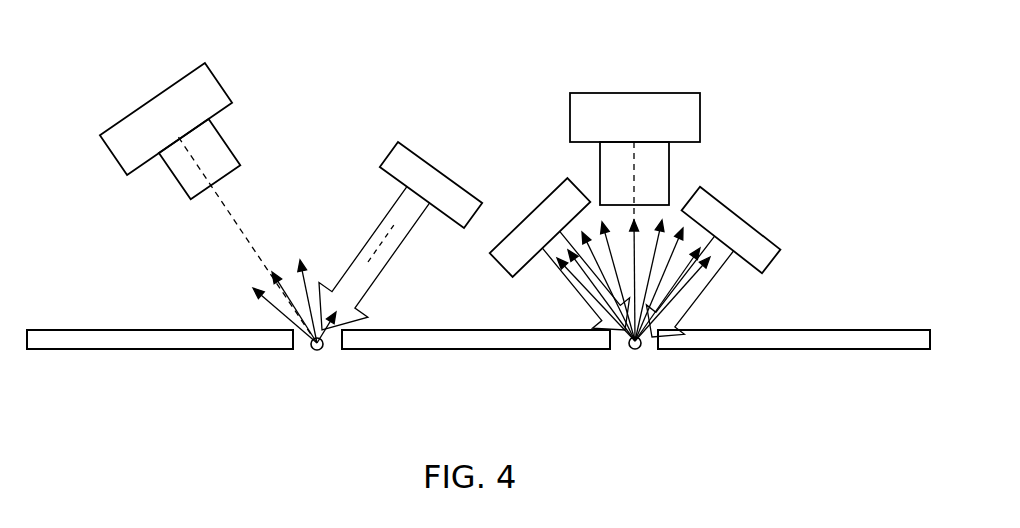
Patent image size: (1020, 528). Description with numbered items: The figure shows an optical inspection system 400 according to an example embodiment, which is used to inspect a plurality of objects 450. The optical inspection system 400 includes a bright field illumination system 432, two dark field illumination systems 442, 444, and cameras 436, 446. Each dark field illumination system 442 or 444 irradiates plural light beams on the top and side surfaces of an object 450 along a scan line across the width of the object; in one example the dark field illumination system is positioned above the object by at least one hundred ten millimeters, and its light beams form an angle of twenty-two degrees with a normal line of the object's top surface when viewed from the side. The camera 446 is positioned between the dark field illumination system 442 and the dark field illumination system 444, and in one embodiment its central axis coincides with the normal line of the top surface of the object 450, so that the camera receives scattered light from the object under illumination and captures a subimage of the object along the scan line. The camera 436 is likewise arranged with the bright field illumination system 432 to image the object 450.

The optical inspection system 400 is at (145, 44).
The bright field illumination system 432 is at (417, 168).
The camera 436 is at (140, 138).
The dark field illumination system 442 is at (738, 230).
The dark field illumination system 444 is at (535, 227).
The camera 446 is at (642, 112).
The objects 450 is at (309, 372).